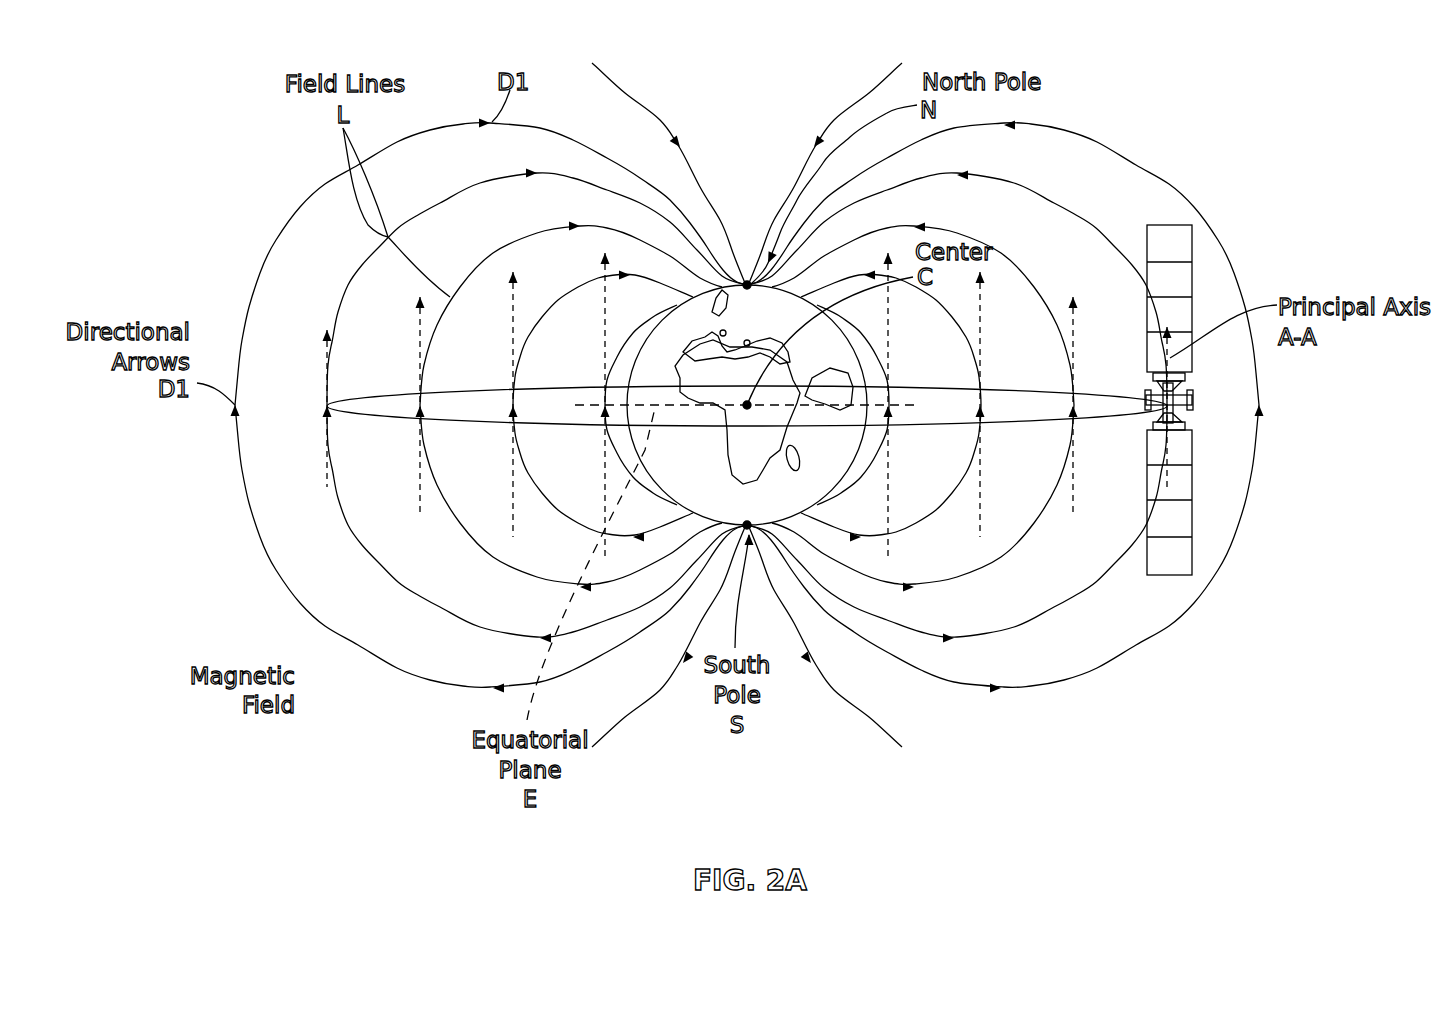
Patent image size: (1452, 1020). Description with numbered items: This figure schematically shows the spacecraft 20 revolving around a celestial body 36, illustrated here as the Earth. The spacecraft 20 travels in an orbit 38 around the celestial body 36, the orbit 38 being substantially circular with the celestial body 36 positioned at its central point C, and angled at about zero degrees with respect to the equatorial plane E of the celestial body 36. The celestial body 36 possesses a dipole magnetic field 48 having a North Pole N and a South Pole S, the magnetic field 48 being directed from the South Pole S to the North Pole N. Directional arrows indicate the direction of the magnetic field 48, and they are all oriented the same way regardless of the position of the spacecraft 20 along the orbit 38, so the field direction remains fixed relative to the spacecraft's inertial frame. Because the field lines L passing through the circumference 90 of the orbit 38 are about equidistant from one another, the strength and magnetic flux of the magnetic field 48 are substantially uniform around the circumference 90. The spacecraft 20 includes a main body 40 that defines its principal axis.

The spacecraft 20 is at (1226, 400).
The celestial body 36 is at (672, 390).
The orbit 38 is at (455, 390).
The main body 40 is at (1190, 398).
The magnetic field 48 is at (336, 630).
The circumference 90 is at (917, 432).